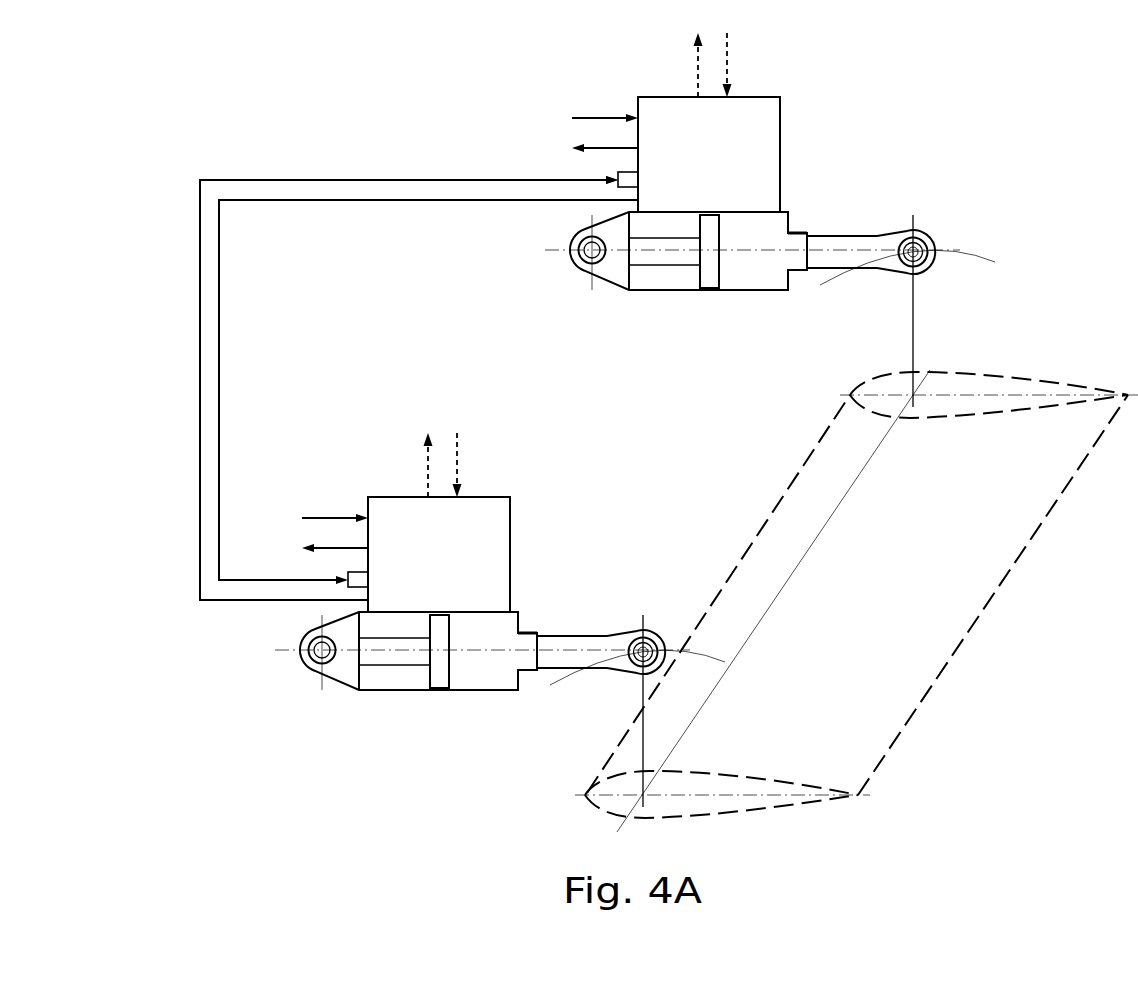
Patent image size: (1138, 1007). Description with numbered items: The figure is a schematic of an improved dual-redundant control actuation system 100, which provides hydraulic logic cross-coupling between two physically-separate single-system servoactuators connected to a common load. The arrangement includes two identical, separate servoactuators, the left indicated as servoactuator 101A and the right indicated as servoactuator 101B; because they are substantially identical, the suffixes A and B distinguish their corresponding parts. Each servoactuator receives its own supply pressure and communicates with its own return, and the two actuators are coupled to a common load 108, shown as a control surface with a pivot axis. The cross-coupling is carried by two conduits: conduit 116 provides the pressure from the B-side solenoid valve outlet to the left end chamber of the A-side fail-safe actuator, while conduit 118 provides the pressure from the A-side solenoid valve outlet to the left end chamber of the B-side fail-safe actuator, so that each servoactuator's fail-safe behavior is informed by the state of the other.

The redundant control actuation system 100 is at (361, 113).
The servoactuator 101A is at (412, 562).
The servoactuator 101B is at (763, 220).
The common load 108 is at (772, 537).
The conduit 116 is at (223, 388).
The conduit 118 is at (198, 362).